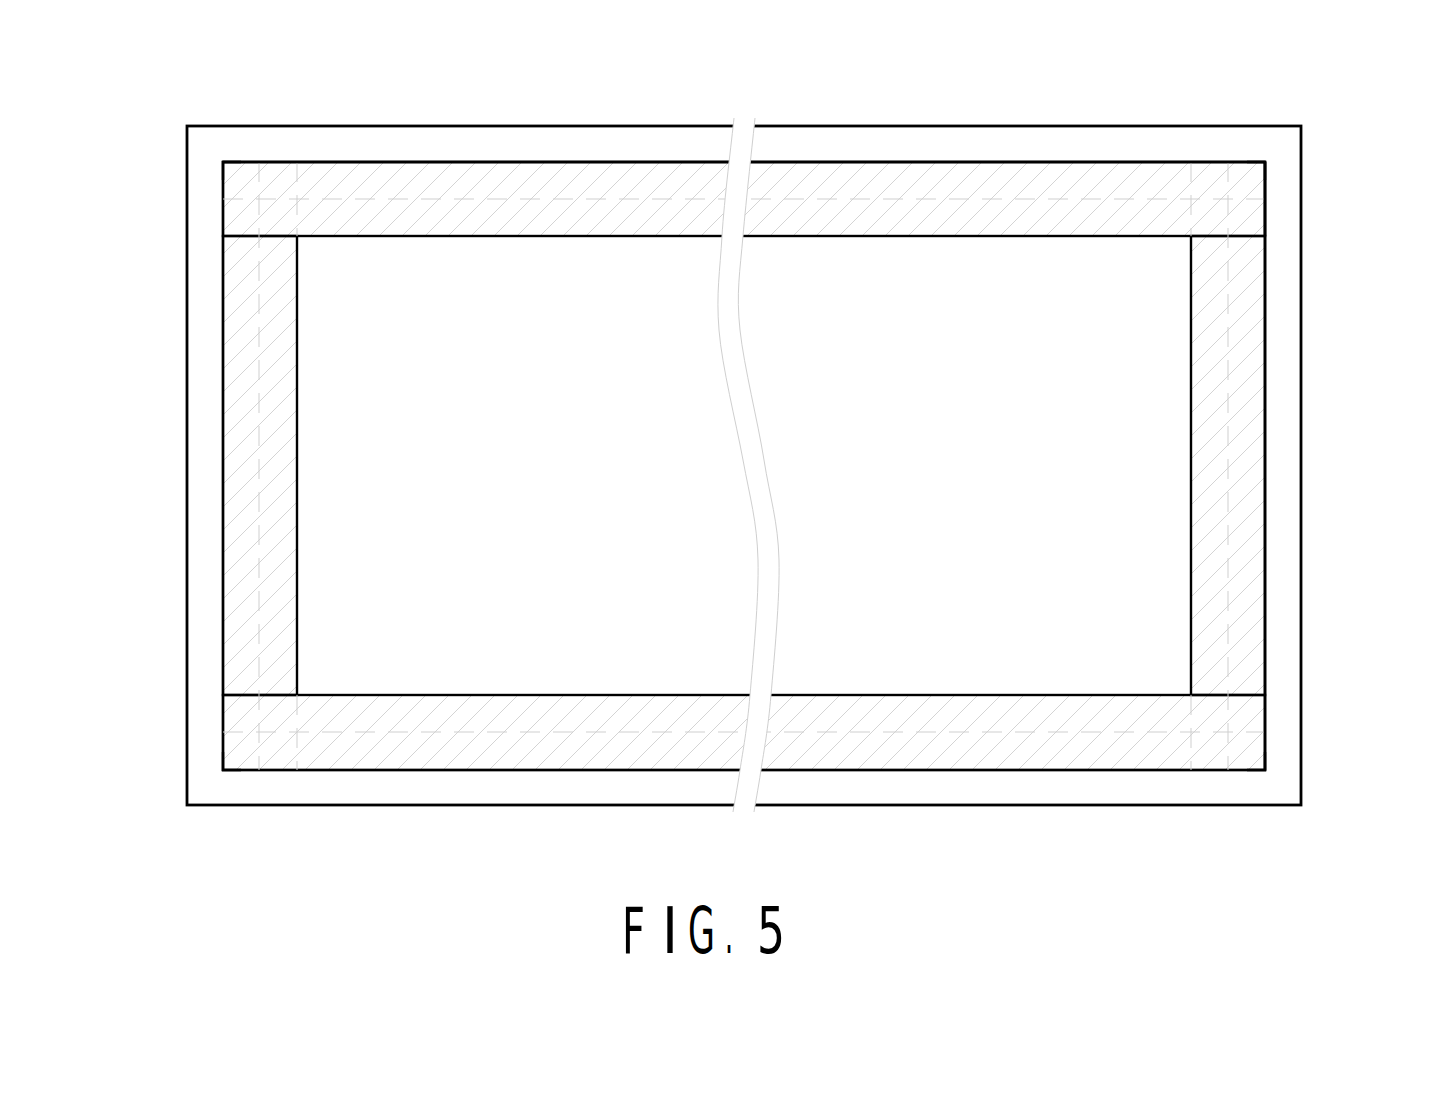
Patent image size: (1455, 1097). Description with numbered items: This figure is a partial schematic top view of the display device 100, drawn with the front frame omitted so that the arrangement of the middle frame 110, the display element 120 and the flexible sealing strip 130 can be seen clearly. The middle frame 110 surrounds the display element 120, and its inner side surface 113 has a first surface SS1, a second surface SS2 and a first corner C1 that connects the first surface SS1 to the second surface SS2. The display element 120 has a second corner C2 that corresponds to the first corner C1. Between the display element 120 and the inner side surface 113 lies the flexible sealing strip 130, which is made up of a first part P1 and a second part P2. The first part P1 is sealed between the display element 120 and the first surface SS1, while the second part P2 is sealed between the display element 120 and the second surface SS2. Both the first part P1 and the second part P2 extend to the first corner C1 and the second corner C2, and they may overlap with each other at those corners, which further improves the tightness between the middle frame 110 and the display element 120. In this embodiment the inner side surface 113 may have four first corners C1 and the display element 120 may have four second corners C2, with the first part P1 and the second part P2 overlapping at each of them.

The display device 100 is at (143, 70).
The middle frame 110 is at (1301, 428).
The inner side surface 113 is at (1373, 203).
The display element 120 is at (1247, 488).
The flexible sealing strip 130 is at (1265, 560).
The first part P1 is at (613, 182).
The second part P2 is at (242, 373).
The first corner C1 is at (223, 162).
The second corner C2 is at (259, 162).
The first surface SS1 is at (1131, 165).
The second surface SS2 is at (1264, 274).